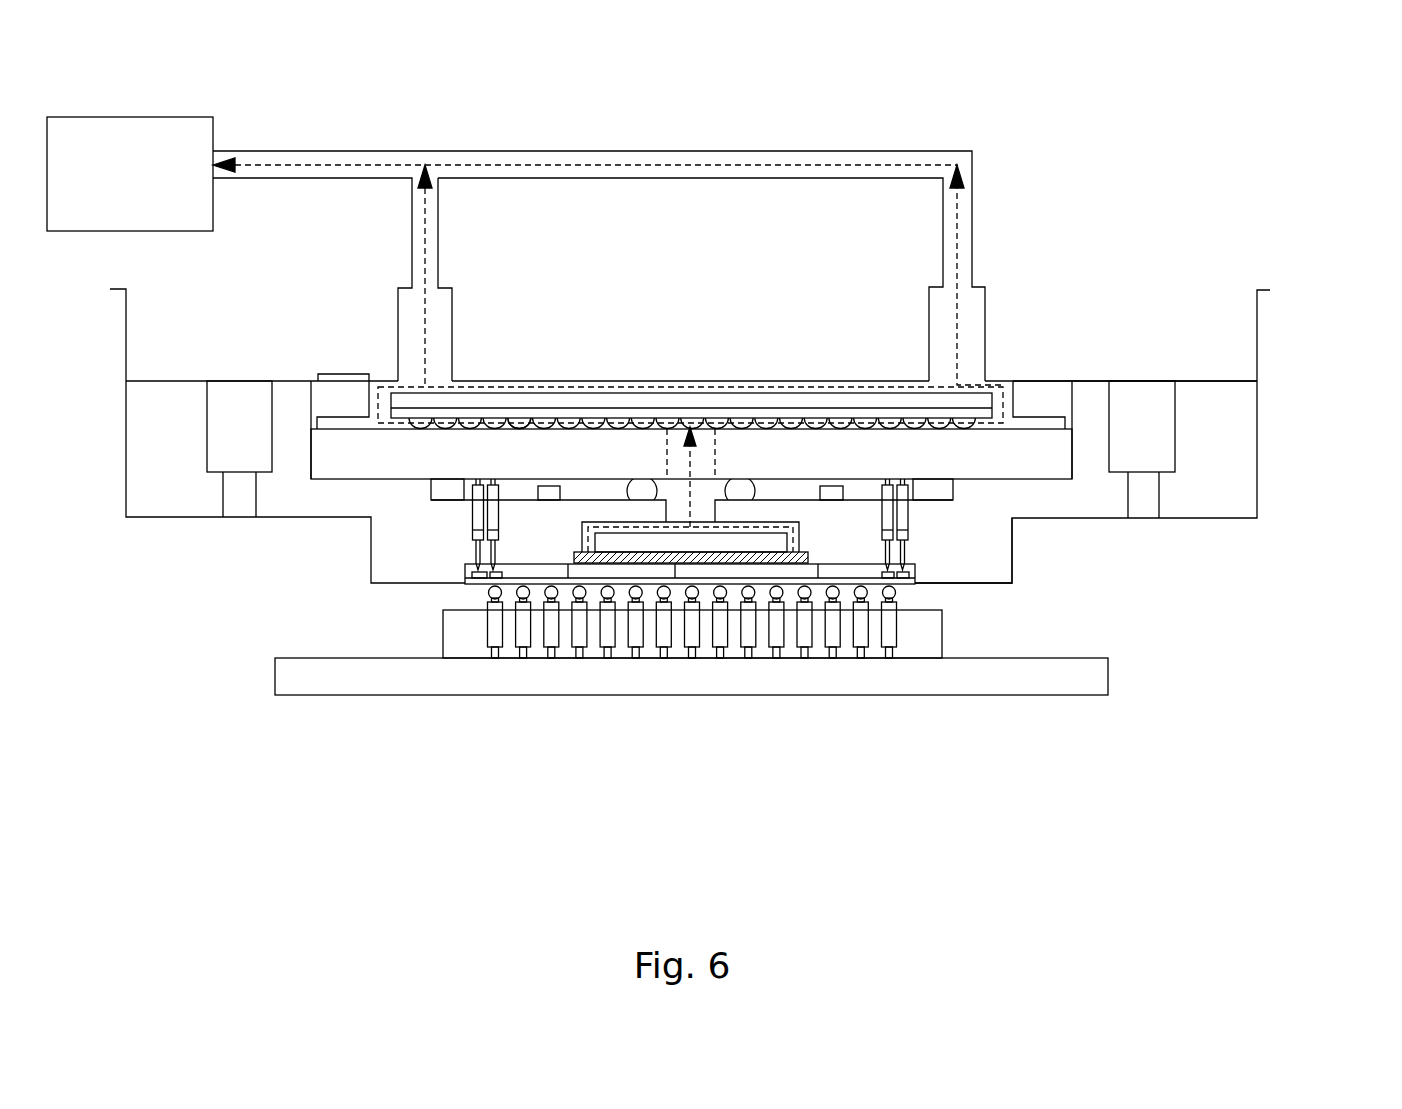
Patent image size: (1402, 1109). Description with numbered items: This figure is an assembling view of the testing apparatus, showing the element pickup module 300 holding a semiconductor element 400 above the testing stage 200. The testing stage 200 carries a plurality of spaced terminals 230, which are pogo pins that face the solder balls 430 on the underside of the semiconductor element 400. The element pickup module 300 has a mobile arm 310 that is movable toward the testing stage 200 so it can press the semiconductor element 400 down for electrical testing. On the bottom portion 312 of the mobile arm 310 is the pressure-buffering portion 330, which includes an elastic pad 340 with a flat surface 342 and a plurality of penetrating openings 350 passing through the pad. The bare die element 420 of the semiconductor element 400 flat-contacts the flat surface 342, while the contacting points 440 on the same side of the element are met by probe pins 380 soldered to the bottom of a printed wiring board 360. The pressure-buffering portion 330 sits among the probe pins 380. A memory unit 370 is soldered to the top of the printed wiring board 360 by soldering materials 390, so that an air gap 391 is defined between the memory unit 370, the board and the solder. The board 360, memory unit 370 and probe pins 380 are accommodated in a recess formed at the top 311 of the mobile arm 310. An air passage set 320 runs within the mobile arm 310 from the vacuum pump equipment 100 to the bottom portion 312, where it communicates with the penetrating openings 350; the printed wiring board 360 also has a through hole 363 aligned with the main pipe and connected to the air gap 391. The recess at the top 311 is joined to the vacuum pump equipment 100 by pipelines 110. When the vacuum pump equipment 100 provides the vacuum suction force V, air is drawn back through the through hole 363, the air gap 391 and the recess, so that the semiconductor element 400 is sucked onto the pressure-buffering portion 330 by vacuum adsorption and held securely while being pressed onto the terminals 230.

The vacuum pump equipment 100 is at (92, 116).
The pipelines 110 is at (413, 238).
The vacuum suction force V is at (272, 163).
The testing stage 200 is at (1124, 671).
The terminals 230 is at (890, 628).
The element pickup module 300 is at (733, 431).
The mobile arm 310 is at (1245, 418).
The top of the mobile arm 311 is at (1226, 381).
The bottom portion of the mobile arm 312 is at (1013, 545).
The air passage set 320 is at (720, 510).
The pressure-buffering portion 330 is at (706, 659).
The elastic pad 340 is at (733, 556).
The flat surface 342 is at (677, 568).
The penetrating openings 350 is at (790, 582).
The printed wiring board 360 is at (318, 445).
The through hole 363 is at (712, 455).
The memory unit 370 is at (425, 394).
The probe pins 380 is at (480, 520).
The soldering materials 390 is at (617, 418).
The air gap 391 is at (532, 418).
The semiconductor element 400 is at (713, 650).
The bare die element 420 is at (592, 568).
The solder balls 430 is at (525, 595).
The contacting points 440 is at (495, 576).